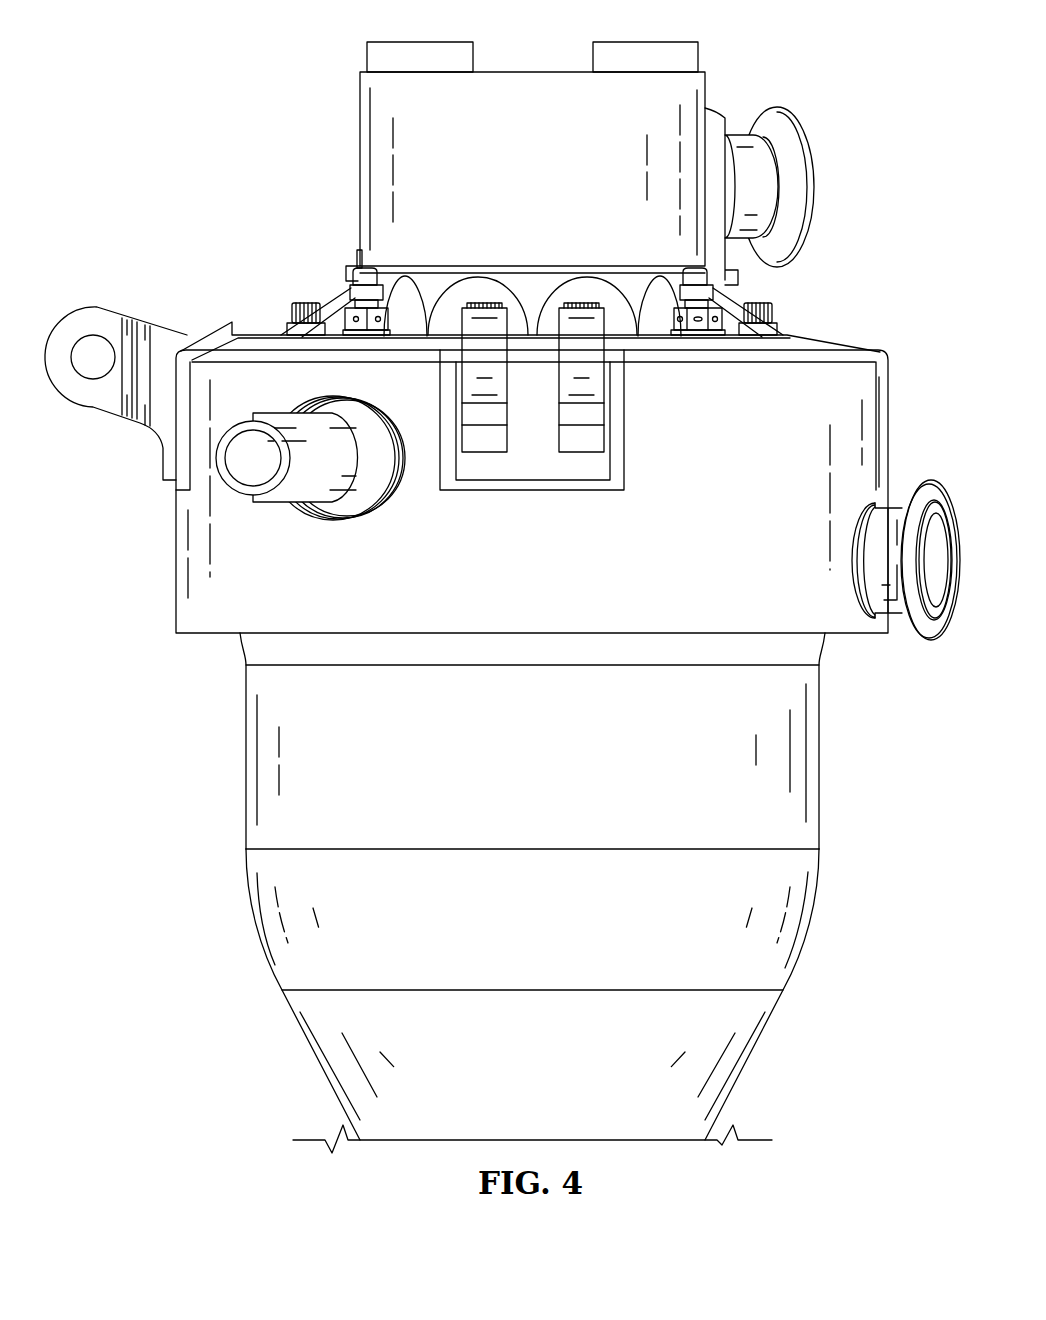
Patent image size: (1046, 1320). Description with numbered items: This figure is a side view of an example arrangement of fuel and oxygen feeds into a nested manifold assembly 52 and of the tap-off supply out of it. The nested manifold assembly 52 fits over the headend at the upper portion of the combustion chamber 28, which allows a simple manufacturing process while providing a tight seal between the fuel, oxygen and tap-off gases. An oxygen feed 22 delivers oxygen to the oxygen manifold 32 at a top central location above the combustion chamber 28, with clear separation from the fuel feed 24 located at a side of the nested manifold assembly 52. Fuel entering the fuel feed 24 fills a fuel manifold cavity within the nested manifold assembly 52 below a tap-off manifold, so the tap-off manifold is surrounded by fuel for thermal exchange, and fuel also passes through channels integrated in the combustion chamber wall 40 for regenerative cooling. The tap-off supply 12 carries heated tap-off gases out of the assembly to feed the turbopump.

The oxygen manifold 32 is at (360, 102).
The oxygen feed 22 is at (808, 140).
The nested manifold assembly 52 is at (890, 397).
The fuel feed 24 is at (928, 484).
The tap-off supply 12 is at (278, 503).
The combustion chamber 28 is at (548, 934).
The combustion chamber wall 40 is at (798, 957).